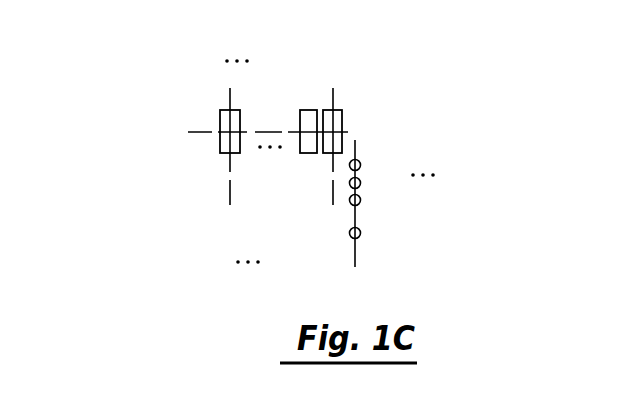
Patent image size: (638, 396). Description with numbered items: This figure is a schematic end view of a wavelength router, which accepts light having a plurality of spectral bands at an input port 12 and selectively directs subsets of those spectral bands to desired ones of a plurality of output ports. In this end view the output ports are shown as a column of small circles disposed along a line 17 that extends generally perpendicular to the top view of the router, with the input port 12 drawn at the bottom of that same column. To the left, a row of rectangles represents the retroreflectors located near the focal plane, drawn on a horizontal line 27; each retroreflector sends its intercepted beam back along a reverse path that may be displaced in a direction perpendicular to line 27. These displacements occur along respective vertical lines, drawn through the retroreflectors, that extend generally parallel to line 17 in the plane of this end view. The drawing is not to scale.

The input port 12 is at (361, 233).
The line 17 is at (357, 152).
The line 27 is at (199, 133).